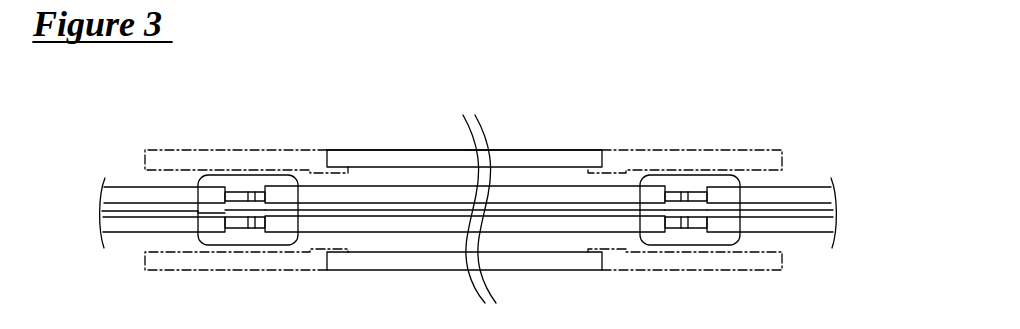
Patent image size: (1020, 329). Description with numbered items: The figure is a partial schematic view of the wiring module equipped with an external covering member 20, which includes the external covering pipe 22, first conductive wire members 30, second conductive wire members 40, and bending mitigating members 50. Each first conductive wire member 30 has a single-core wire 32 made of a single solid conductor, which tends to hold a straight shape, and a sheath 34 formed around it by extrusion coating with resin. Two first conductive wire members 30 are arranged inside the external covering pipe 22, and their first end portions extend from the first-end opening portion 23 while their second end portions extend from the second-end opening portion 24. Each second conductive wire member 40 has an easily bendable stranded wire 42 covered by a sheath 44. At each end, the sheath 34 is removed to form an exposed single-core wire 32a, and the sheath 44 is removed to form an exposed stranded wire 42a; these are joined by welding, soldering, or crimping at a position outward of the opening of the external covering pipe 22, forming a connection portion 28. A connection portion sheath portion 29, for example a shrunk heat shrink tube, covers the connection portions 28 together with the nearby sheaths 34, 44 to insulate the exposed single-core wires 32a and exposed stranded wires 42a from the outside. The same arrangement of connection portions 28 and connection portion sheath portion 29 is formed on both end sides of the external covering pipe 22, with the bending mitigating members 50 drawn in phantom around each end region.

The wiring module equipped with an external covering member 20 is at (509, 124).
The external covering pipe 22 is at (397, 150).
The first-end opening portion 23 is at (352, 150).
The second-end opening portion 24 is at (568, 150).
The connection portion 28 is at (250, 217).
The connection portion sheath portion 29 is at (200, 177).
The first conductive wire member 30 is at (515, 230).
The single-core wire 32 is at (483, 197).
The exposed single-core wire 32a is at (270, 215).
The sheath 34 is at (414, 196).
The second conductive wire member 40 is at (138, 213).
The stranded wire 42 is at (477, 200).
The exposed stranded wire 42a is at (240, 213).
The sheath 44 is at (138, 222).
The bending mitigating member 50 is at (155, 147).